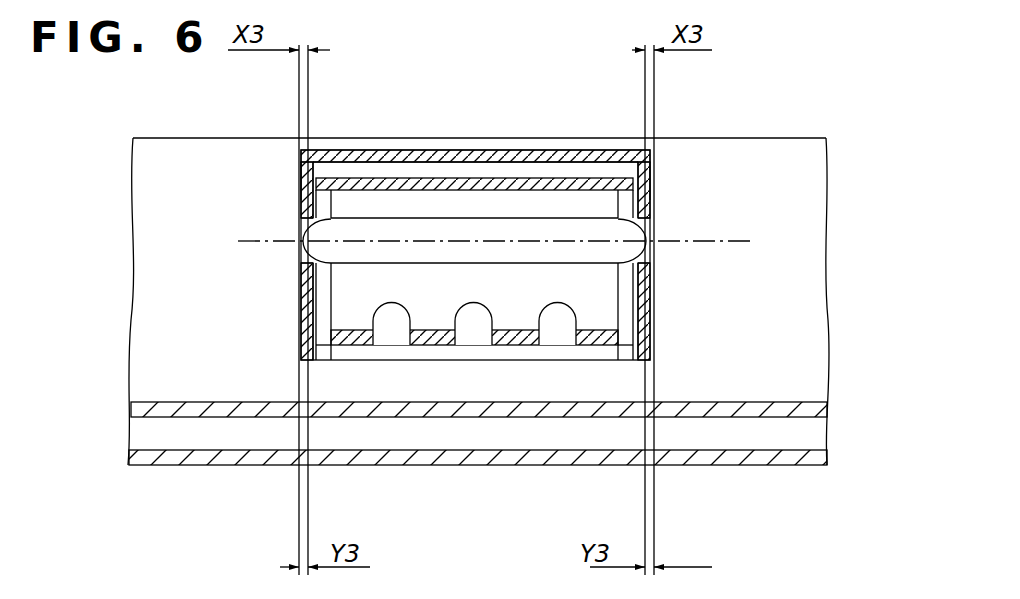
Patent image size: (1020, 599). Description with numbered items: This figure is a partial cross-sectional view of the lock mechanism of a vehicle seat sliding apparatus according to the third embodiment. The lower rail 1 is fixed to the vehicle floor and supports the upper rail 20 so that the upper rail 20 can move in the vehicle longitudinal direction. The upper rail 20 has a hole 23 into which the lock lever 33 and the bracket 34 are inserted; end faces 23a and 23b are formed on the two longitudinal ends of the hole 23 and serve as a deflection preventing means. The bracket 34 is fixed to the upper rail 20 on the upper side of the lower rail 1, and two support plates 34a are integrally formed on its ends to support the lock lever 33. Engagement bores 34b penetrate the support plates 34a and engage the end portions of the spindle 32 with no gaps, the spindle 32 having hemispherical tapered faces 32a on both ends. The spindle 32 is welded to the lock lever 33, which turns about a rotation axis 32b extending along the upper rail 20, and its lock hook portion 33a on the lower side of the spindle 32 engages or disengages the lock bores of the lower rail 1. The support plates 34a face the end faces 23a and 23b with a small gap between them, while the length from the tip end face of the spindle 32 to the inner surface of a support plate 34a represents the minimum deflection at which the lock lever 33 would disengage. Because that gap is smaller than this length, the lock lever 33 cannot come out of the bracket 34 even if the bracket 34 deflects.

The lower rail 1 is at (788, 466).
The upper rail 20 is at (818, 203).
The hole 23 is at (513, 178).
The end face 23a is at (301, 346).
The end face 23b is at (651, 341).
The spindle 32 is at (655, 231).
The hemispherical tapered face 32a is at (306, 232).
The rotation axis 32b is at (523, 250).
The lock lever 33 is at (352, 288).
The lock hook portion 33a is at (508, 348).
The bracket 34 is at (447, 152).
The support plate 34a is at (301, 177).
The engagement bore 34b is at (302, 254).